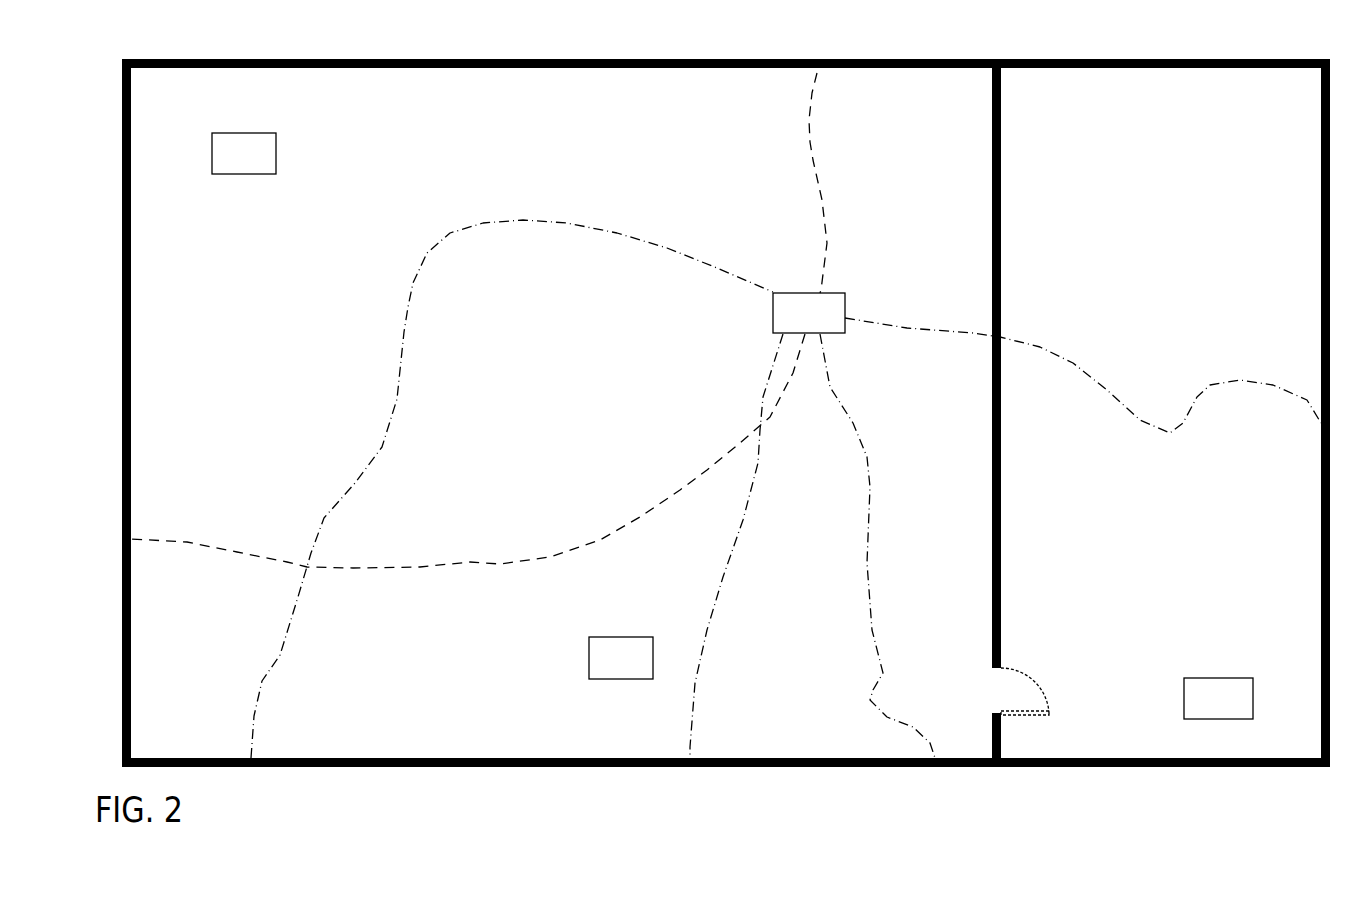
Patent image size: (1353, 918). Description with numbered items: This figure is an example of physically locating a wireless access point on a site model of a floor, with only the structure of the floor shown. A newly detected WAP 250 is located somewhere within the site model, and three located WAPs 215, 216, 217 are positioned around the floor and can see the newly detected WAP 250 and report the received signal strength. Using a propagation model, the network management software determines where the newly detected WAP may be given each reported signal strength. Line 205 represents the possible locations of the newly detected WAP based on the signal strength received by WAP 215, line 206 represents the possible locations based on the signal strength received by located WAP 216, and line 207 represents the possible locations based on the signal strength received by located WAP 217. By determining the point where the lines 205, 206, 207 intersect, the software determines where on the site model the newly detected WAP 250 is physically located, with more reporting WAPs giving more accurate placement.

The line 205 is at (799, 143).
The line 206 is at (397, 306).
The line 207 is at (1199, 387).
The located WAP 215 is at (244, 153).
The located WAP 216 is at (621, 658).
The located WAP 217 is at (1218, 698).
The newly detected WAP 250 is at (809, 313).